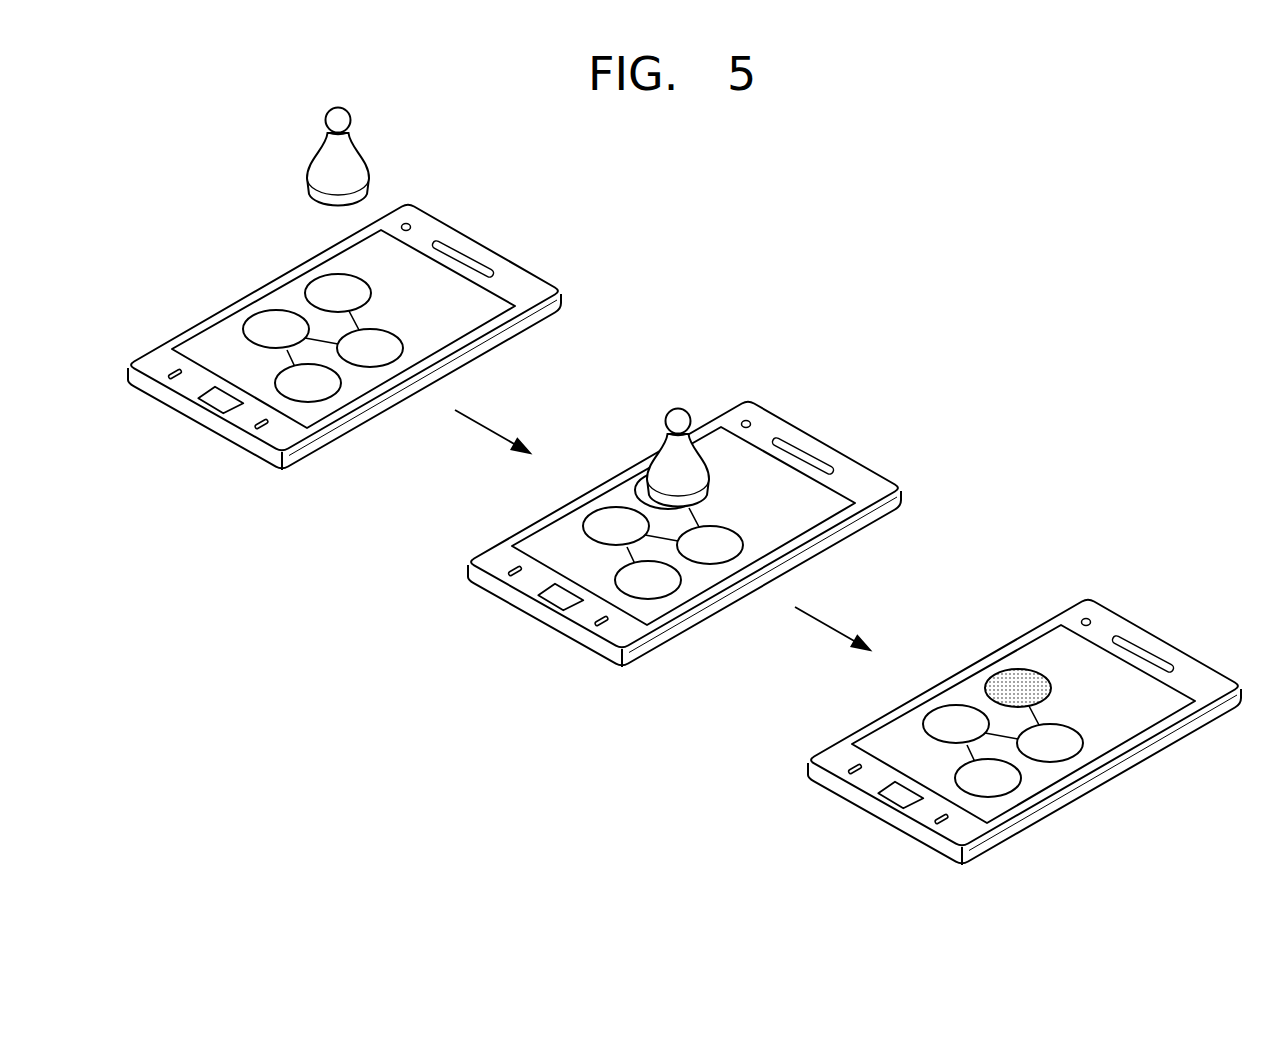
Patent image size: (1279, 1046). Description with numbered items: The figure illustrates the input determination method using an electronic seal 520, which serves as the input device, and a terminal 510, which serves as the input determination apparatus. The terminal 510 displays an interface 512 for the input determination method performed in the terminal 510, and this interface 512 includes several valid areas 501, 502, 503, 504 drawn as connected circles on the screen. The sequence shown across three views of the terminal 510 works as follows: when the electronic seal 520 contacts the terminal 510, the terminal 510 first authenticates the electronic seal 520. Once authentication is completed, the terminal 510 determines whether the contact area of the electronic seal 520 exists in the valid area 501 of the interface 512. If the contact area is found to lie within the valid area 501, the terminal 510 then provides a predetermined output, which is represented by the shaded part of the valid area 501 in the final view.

The valid area 501 is at (317, 279).
The valid area 502 is at (384, 366).
The valid area 503 is at (255, 315).
The valid area 504 is at (317, 401).
The terminal 510 is at (484, 247).
The interface 512 is at (500, 290).
The electronic seal 520 is at (358, 148).